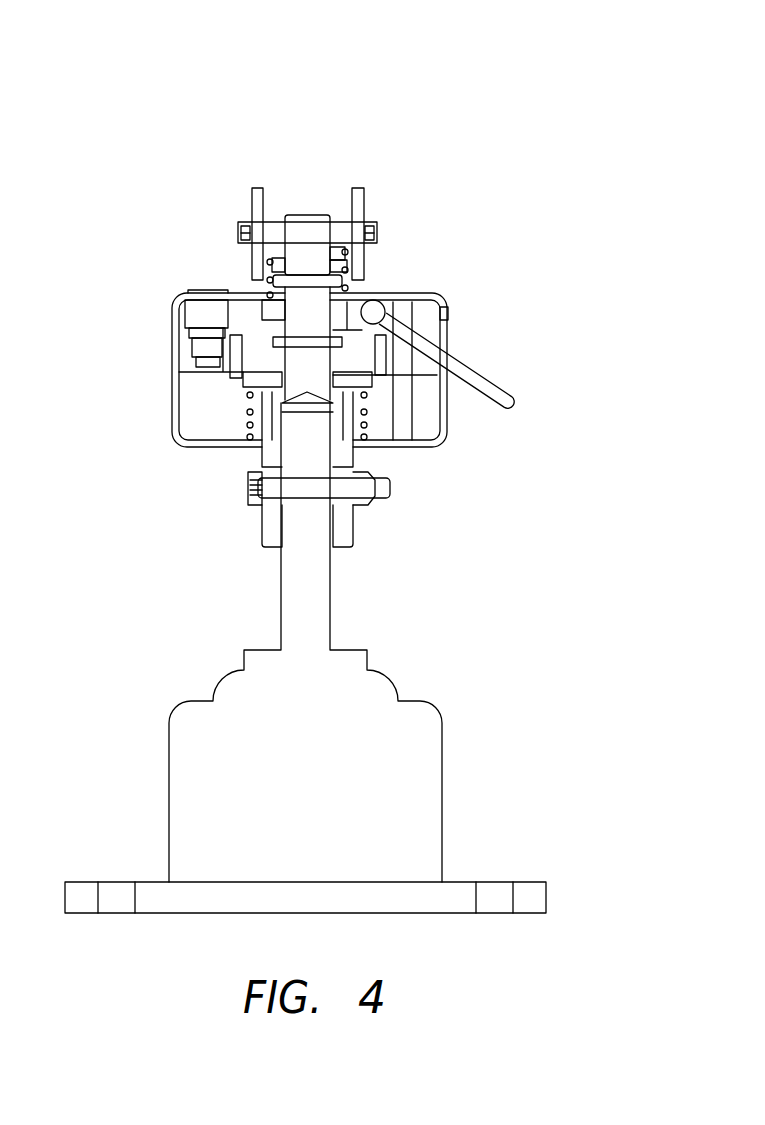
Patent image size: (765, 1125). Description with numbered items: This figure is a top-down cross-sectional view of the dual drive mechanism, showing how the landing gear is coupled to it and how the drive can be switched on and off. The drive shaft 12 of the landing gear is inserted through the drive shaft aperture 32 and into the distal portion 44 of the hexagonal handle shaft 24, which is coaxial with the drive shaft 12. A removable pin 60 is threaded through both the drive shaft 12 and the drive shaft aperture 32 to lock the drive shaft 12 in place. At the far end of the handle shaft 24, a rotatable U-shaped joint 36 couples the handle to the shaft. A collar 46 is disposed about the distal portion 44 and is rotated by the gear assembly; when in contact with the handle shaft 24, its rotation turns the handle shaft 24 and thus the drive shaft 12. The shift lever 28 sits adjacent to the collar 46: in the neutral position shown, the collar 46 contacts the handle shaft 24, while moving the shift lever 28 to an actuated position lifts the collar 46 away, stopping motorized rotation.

The drive shaft 12 is at (297, 590).
The handle shaft 24 is at (315, 313).
The shift lever 28 is at (512, 385).
The drive shaft aperture 32 is at (345, 512).
The rotatable U-shaped joint 36 is at (368, 193).
The distal portion of the handle shaft 44 is at (345, 465).
The collar 46 is at (250, 360).
The removable pin 60 is at (250, 493).